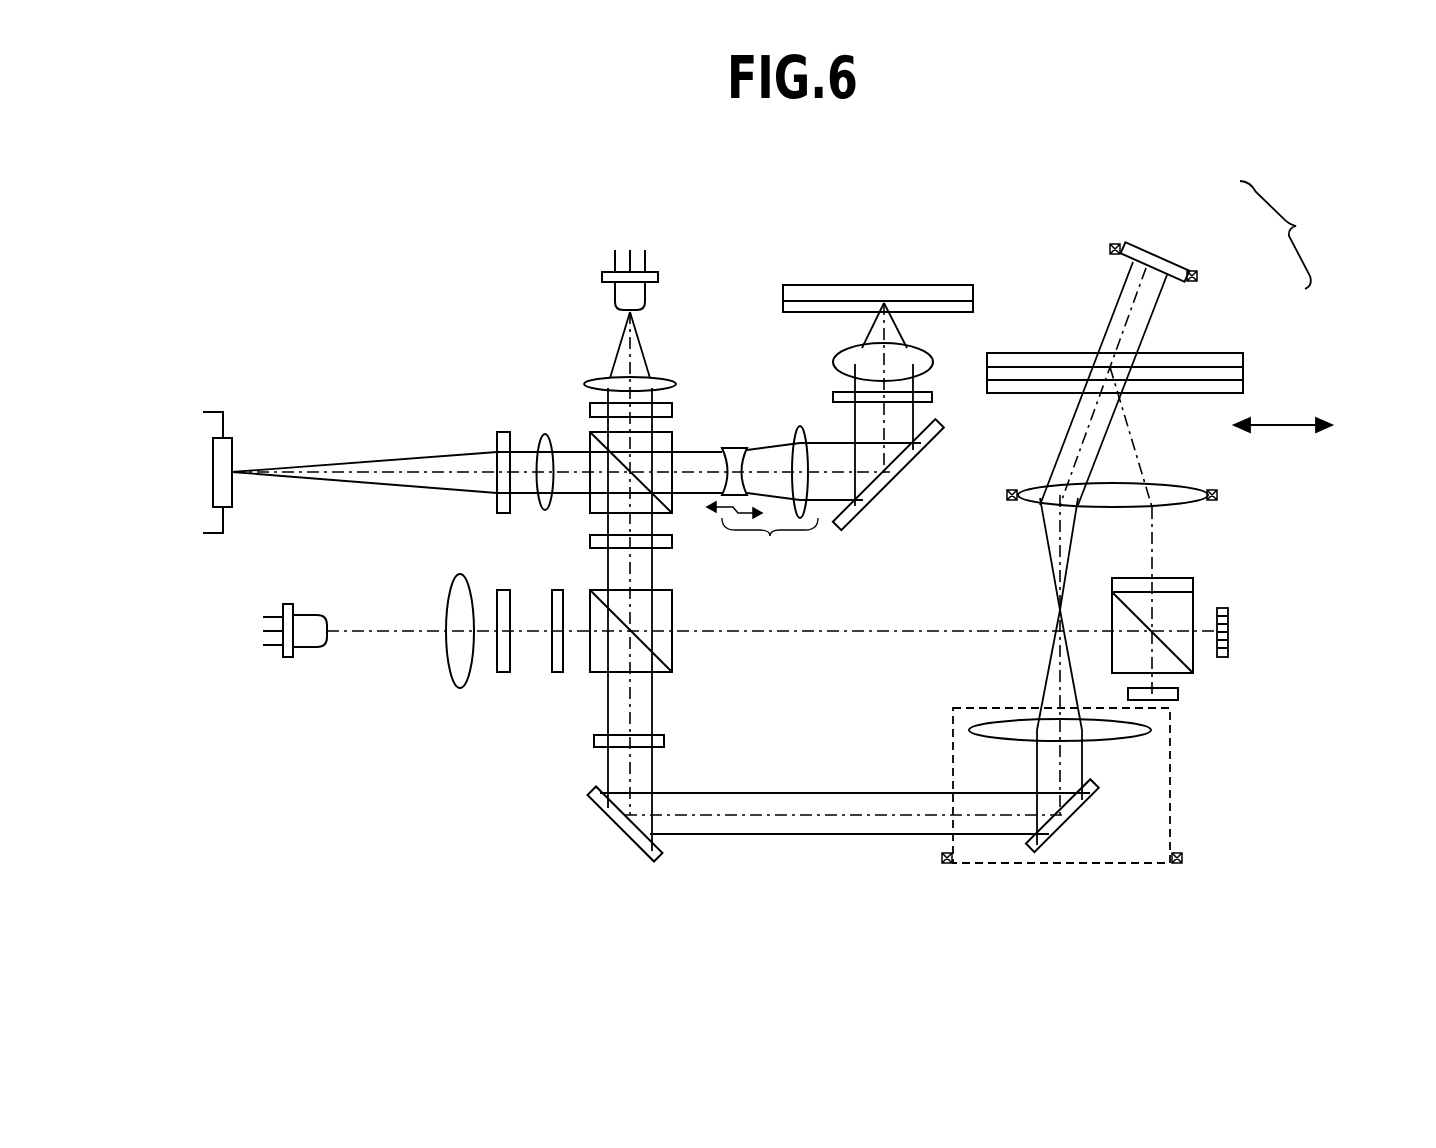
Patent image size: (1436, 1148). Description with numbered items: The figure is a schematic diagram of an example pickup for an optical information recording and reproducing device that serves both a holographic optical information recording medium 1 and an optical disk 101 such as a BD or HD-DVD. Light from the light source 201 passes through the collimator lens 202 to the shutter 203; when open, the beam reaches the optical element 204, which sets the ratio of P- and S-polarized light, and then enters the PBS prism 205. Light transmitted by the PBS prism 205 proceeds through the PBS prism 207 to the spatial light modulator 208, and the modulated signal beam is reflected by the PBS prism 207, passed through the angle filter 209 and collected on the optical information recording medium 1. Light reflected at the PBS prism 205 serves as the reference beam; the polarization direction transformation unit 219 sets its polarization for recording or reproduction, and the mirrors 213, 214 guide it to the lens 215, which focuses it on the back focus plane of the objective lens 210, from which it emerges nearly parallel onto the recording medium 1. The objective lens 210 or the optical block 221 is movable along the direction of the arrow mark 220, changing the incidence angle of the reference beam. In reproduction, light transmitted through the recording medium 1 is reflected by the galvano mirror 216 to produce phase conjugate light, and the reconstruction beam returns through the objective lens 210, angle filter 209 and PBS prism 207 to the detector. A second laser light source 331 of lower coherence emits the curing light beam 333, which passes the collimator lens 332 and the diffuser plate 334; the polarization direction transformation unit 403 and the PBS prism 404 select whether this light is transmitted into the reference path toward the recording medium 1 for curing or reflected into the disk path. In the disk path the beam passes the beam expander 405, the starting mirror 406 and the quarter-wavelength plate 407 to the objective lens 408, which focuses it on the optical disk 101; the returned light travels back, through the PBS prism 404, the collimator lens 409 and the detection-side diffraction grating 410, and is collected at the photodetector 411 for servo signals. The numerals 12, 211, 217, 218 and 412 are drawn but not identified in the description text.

The optical information recording medium 1 is at (1243, 358).
The detection head 12 is at (1285, 235).
The optical disk 101 is at (808, 295).
The light source 201 is at (312, 613).
The collimator lens 202 is at (450, 590).
The shutter 203 is at (500, 590).
The optical element 204 is at (558, 590).
The PBS prism 205 is at (597, 660).
The PBS prism 207 is at (1185, 605).
The spatial light modulator 208 is at (1230, 632).
The angle filter 209 is at (1188, 578).
The objective lens 210 is at (1170, 487).
The lens 211 is at (1223, 493).
The mirror 213 is at (618, 818).
The mirror 214 is at (1075, 832).
The lens 215 is at (1147, 733).
The galvano mirror 216 is at (1182, 268).
The mirror holder 217 is at (1197, 276).
The optical plate 218 is at (1180, 693).
The polarization direction transformation unit 219 is at (593, 741).
The arrow mark 220 is at (1290, 430).
The optical block 221 is at (973, 863).
The laser light source 331 is at (608, 272).
The collimator lens 332 is at (588, 381).
The curing light beam 333 is at (755, 805).
The diffuser plate 334 is at (665, 542).
The polarization direction transformation unit 403 is at (597, 408).
The PBS prism 404 is at (667, 443).
The beam expander 405 is at (762, 510).
The starting mirror 406 is at (873, 495).
The ¼ wavelength plate 407 is at (842, 397).
The objective lens 408 is at (842, 360).
The collimator lens 409 is at (541, 440).
The detection-side diffraction grating 410 is at (503, 436).
The photodetector 411 is at (232, 445).
The lens 412 is at (862, 427).